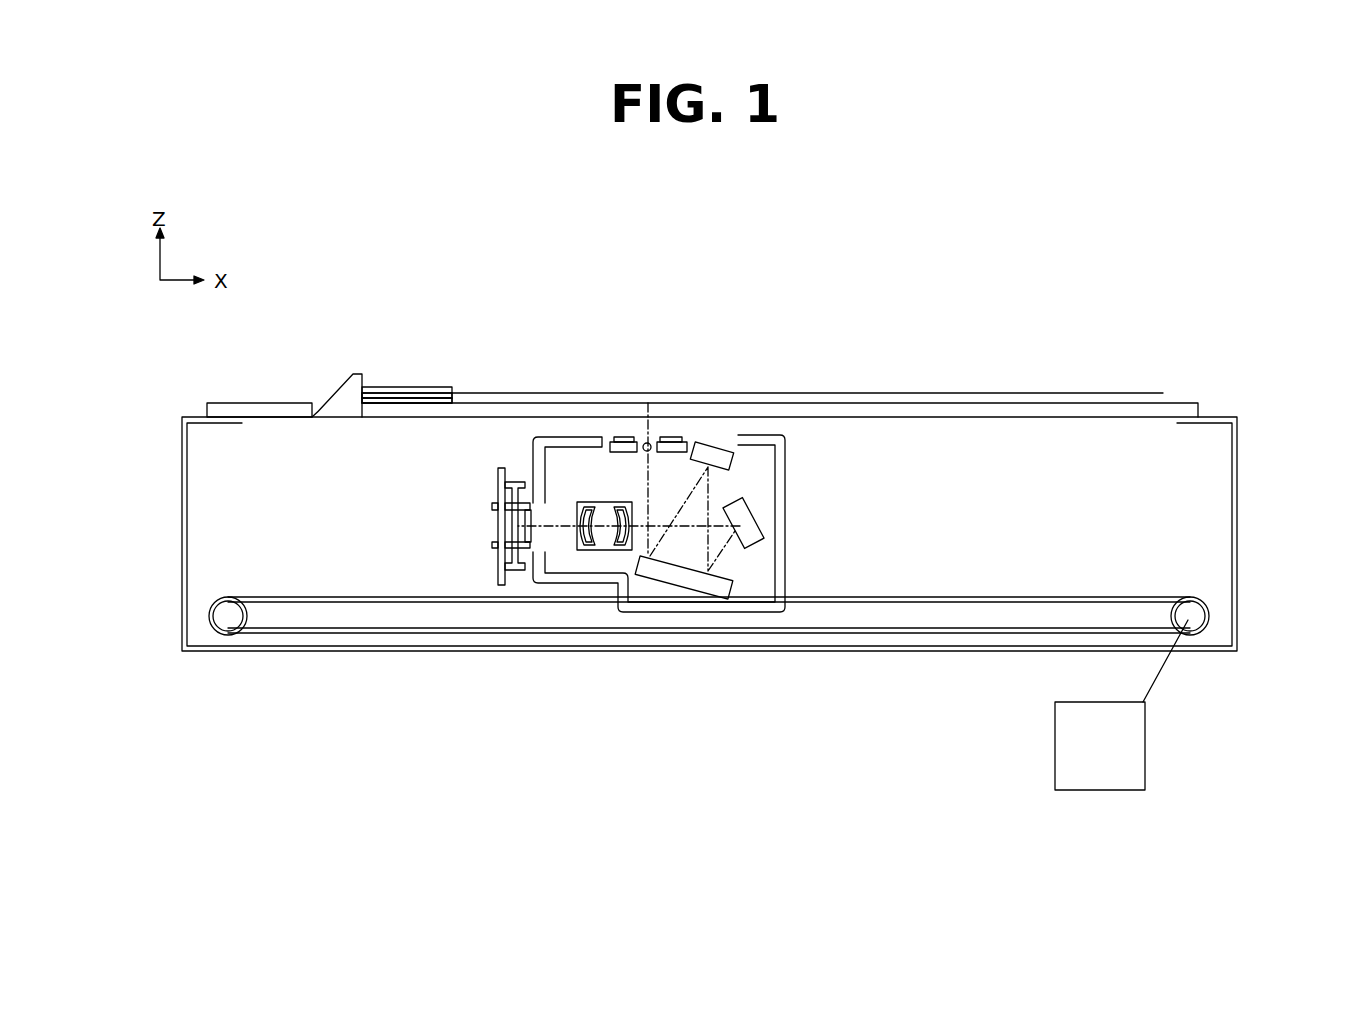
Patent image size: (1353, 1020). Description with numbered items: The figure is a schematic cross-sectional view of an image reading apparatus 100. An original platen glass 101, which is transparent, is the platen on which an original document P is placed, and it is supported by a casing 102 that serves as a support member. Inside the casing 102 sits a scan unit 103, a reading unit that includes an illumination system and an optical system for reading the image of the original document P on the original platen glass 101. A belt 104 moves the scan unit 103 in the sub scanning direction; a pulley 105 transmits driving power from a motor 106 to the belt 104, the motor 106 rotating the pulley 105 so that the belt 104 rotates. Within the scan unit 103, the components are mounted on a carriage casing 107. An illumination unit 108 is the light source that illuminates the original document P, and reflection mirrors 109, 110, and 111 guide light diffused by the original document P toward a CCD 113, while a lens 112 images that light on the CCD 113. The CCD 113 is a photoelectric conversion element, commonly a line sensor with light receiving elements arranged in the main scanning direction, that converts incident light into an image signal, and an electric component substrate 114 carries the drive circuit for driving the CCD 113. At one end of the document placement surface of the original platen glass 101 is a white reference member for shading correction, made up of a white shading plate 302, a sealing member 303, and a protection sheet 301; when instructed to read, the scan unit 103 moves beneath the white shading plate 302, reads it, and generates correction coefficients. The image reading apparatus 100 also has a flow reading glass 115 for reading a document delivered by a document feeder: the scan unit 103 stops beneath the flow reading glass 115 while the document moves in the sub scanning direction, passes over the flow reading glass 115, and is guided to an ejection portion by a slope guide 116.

The image reading apparatus 100 is at (1187, 304).
The original platen glass 101 is at (1183, 403).
The casing 102 is at (333, 652).
The scan unit 103 is at (786, 503).
The belt 104 is at (878, 634).
The pulley 105 is at (231, 622).
The motor 106 is at (1055, 742).
The carriage casing 107 is at (571, 437).
The illumination unit 108 is at (673, 437).
The reflection mirror 109 is at (678, 591).
The reflection mirror 110 is at (722, 441).
The reflection mirror 111 is at (758, 547).
The lens 112 is at (608, 551).
The CCD 113 is at (529, 549).
The electric component substrate 114 is at (497, 574).
The flow reading glass 115 is at (249, 401).
The slope guide 116 is at (330, 388).
The protection sheet 301 is at (408, 387).
The white shading plate 302 is at (407, 395).
The sealing member 303 is at (407, 400).
The original document P is at (893, 393).